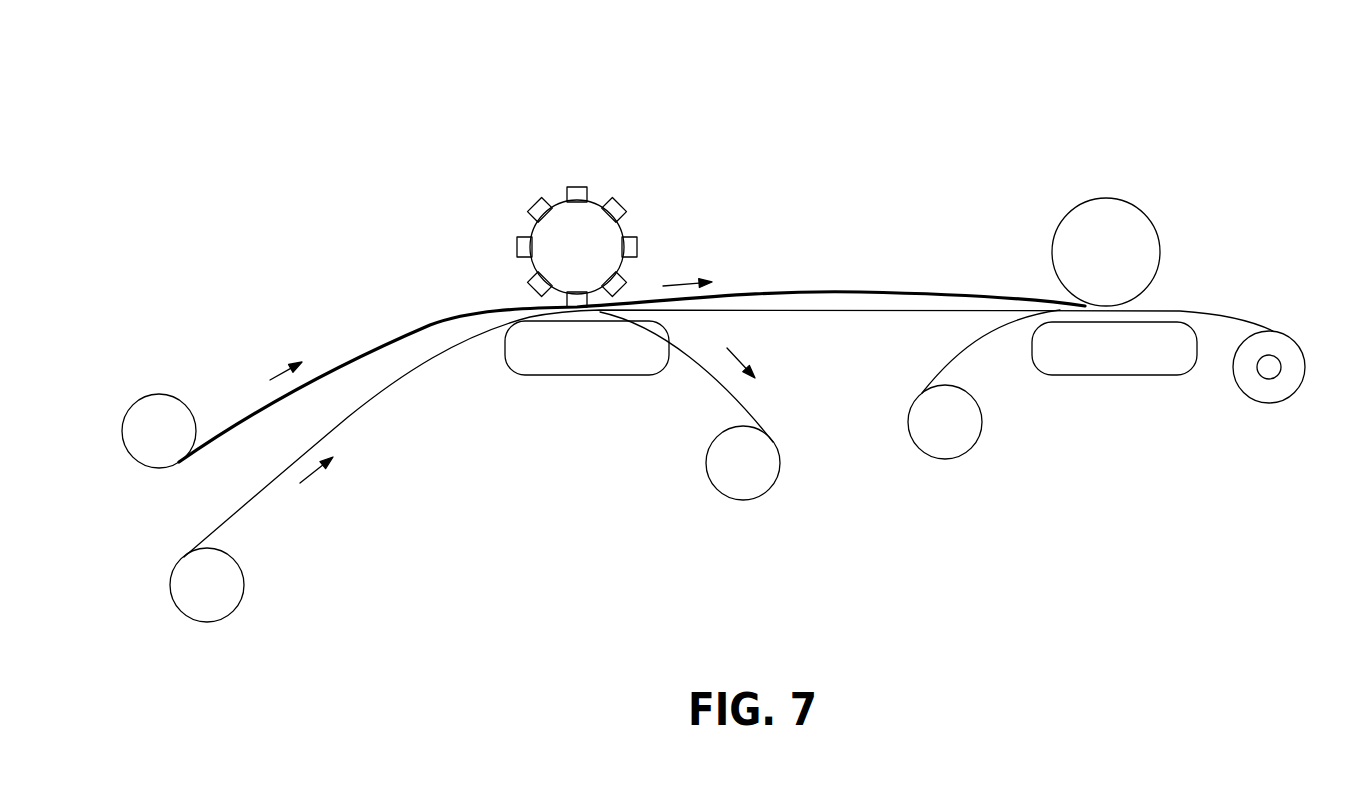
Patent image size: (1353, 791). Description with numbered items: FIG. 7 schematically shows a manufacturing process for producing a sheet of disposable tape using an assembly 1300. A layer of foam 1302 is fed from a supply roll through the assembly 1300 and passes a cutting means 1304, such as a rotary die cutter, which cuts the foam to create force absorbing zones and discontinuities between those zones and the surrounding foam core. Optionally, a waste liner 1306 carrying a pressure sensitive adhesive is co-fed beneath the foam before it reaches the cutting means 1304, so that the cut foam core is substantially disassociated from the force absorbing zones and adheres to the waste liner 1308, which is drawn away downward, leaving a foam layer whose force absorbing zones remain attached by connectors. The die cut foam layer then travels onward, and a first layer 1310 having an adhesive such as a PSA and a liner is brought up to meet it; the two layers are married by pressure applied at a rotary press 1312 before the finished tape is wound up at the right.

The assembly 1300 is at (898, 118).
The layer of foam 1302 is at (160, 405).
The cutting means 1304 is at (595, 198).
The waste liner 1306 is at (228, 587).
The waste liner 1308 is at (730, 478).
The first layer 1310 is at (932, 445).
The rotary press 1312 is at (1118, 218).